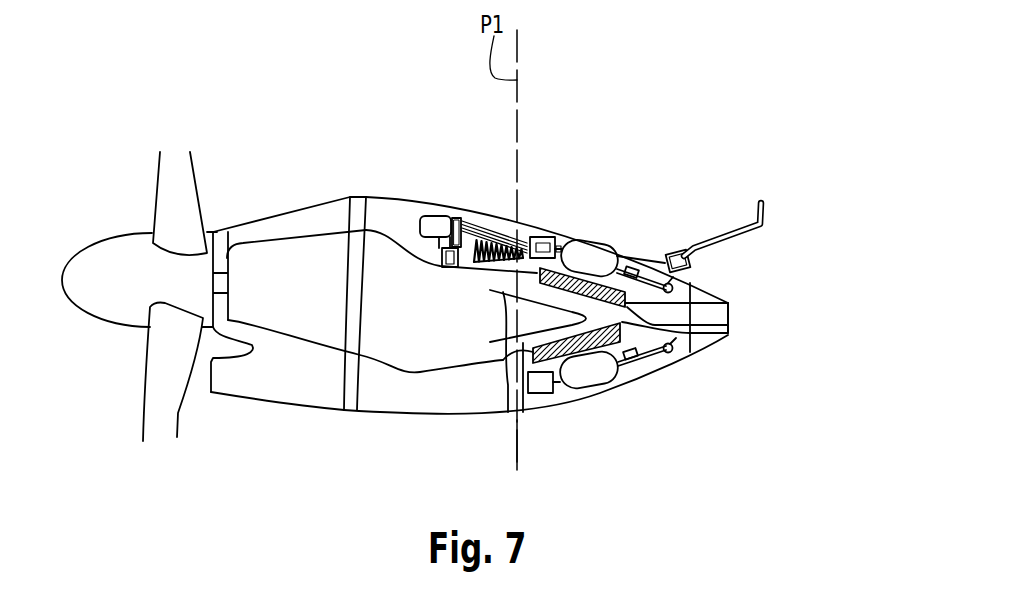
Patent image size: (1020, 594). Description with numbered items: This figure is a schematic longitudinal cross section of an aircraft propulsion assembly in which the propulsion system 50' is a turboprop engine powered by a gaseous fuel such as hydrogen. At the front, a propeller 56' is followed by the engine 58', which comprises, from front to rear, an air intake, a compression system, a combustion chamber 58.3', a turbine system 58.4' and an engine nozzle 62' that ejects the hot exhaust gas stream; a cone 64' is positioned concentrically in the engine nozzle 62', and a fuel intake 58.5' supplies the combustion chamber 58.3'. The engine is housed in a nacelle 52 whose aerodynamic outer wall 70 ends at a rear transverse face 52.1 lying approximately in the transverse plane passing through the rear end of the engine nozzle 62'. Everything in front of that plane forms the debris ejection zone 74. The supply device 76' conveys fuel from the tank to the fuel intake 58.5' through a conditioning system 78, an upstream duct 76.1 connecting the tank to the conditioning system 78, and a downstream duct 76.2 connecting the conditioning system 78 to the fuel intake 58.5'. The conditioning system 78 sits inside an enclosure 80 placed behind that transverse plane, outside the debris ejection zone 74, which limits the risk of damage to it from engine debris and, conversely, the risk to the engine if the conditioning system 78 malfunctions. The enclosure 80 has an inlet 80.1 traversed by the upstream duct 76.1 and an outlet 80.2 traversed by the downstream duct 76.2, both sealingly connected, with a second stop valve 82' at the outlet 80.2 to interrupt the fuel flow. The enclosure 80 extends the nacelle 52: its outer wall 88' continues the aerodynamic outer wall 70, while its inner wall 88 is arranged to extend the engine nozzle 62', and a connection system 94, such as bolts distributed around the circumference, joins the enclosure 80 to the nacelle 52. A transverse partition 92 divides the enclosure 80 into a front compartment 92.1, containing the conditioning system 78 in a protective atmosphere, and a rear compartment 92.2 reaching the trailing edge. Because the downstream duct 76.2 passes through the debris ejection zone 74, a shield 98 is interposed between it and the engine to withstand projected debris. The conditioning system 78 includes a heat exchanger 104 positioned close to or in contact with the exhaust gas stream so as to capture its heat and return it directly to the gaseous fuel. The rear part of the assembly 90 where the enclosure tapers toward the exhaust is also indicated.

The propulsion system 50' is at (289, 199).
The nacelle 52 is at (307, 410).
The rear transverse face 52.1 is at (546, 404).
The propeller 56' is at (165, 172).
The engine 58' is at (340, 271).
The combustion chamber 58.3' is at (422, 184).
The turbine system 58.4' is at (469, 200).
The fuel intake 58.5' is at (470, 171).
The engine nozzle 62' is at (538, 182).
The cone 64' is at (584, 208).
The aerodynamic outer wall 70 is at (433, 414).
The debris ejection zone 74 is at (441, 154).
The supply device 76' is at (528, 211).
The upstream duct 76.1 is at (731, 227).
The downstream duct 76.2 is at (490, 282).
The conditioning system 78 is at (620, 255).
The enclosure 80 is at (661, 372).
The inlet 80.1 is at (692, 283).
The outlet 80.2 is at (547, 243).
The second stop valve 82' is at (618, 194).
The inner wall 88 is at (500, 377).
The outer wall 88' is at (572, 414).
The nozzle 90 is at (718, 343).
The transverse partition 92 is at (693, 346).
The front compartment 92.1 is at (681, 352).
The rear compartment 92.2 is at (703, 296).
The connection system 94 is at (525, 418).
The shield 98 is at (437, 290).
The heat exchanger 104 is at (728, 312).